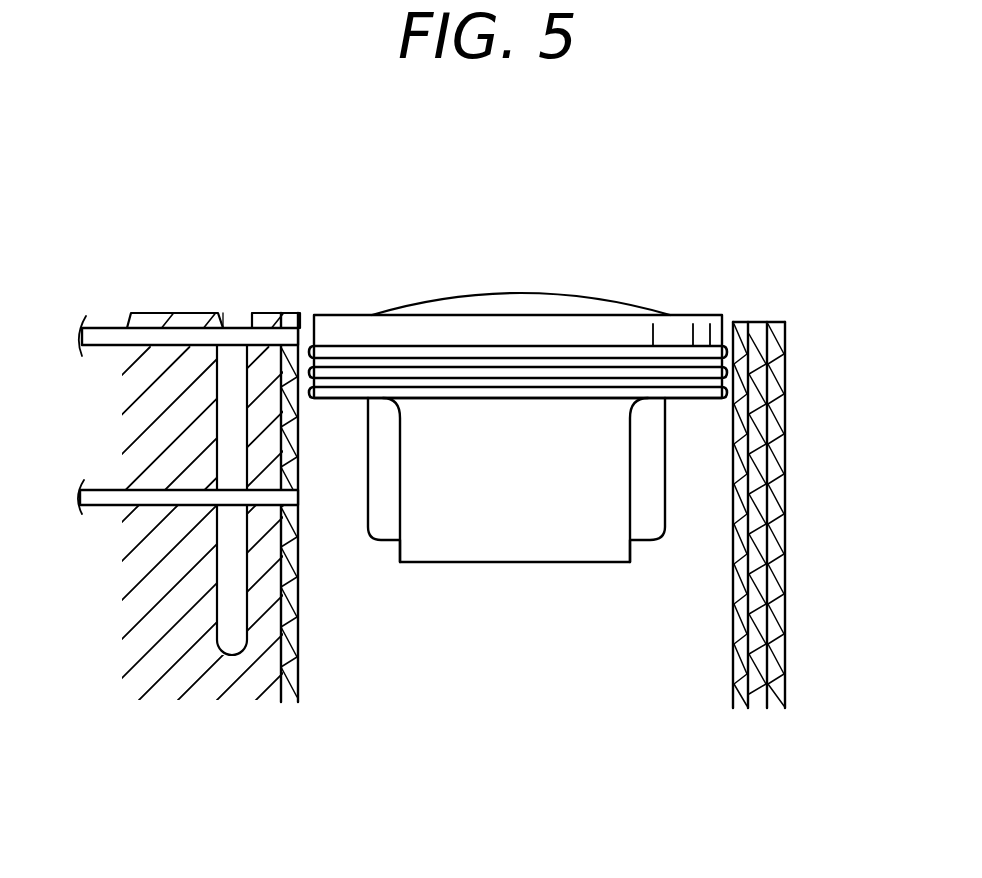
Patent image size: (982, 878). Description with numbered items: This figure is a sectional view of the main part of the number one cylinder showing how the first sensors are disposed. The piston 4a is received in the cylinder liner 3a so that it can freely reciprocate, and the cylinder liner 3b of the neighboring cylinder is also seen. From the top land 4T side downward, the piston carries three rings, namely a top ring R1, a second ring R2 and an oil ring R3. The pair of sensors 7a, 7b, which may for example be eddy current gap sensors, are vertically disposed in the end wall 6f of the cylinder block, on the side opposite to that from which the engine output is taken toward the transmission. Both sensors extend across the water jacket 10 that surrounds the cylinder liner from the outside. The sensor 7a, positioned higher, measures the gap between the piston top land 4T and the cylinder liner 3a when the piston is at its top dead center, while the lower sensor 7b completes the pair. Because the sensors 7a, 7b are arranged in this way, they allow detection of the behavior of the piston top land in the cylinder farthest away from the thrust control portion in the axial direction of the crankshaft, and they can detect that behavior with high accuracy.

The cylinder liner 3a is at (300, 625).
The cylinder liner 3b is at (786, 637).
The piston 4a is at (706, 318).
The piston top land 4T is at (593, 330).
The top ring R1 is at (340, 346).
The second ring R2 is at (375, 358).
The oil ring R3 is at (415, 378).
The end wall 6f is at (162, 313).
The sensor 7a is at (103, 328).
The sensor 7b is at (160, 508).
The water jacket 10 is at (231, 326).